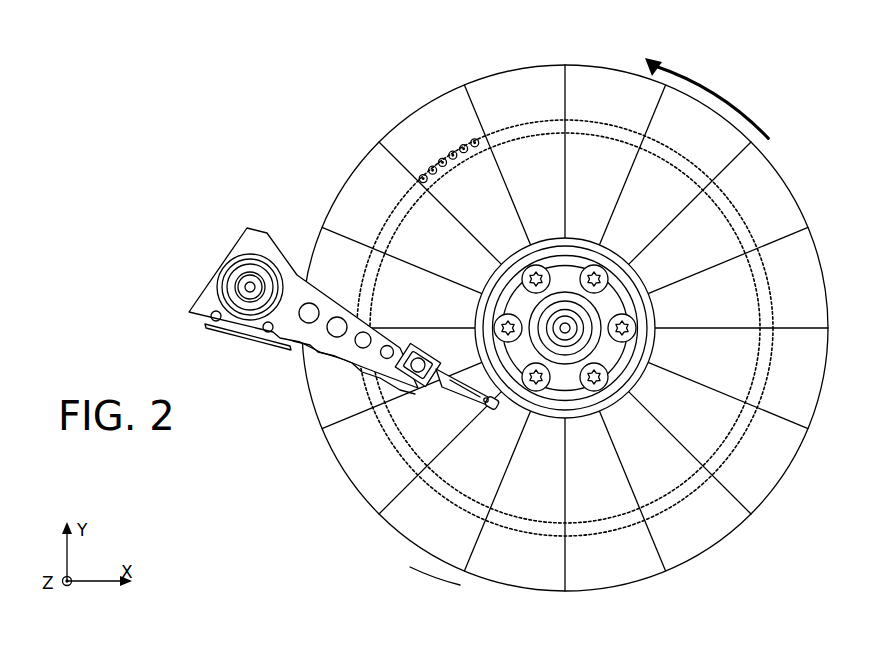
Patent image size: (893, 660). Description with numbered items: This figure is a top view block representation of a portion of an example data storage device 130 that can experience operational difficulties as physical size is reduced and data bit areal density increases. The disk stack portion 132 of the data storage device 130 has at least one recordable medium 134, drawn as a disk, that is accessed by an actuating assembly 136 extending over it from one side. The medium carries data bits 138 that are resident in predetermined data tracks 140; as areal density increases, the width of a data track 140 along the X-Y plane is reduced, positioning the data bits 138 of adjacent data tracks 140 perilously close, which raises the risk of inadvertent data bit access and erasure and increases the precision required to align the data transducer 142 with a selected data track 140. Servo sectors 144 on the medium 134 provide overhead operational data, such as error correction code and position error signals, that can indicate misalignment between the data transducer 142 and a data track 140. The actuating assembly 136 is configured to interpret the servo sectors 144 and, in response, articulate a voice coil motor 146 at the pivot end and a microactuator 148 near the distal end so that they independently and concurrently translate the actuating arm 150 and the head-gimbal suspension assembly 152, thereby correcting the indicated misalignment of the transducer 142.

The data storage device 130 is at (250, 55).
The disk stack portion 132 is at (326, 453).
The recordable medium 134 is at (433, 557).
The actuating assembly 136 is at (328, 268).
The data bits 138 is at (438, 155).
The data tracks 140 is at (494, 119).
The data transducer 142 is at (492, 410).
The servo sectors 144 is at (730, 494).
The voice coil motor 146 is at (213, 298).
The microactuator 148 is at (421, 348).
The actuating arm 150 is at (312, 355).
The head-gimbal suspension assembly 152 is at (443, 395).